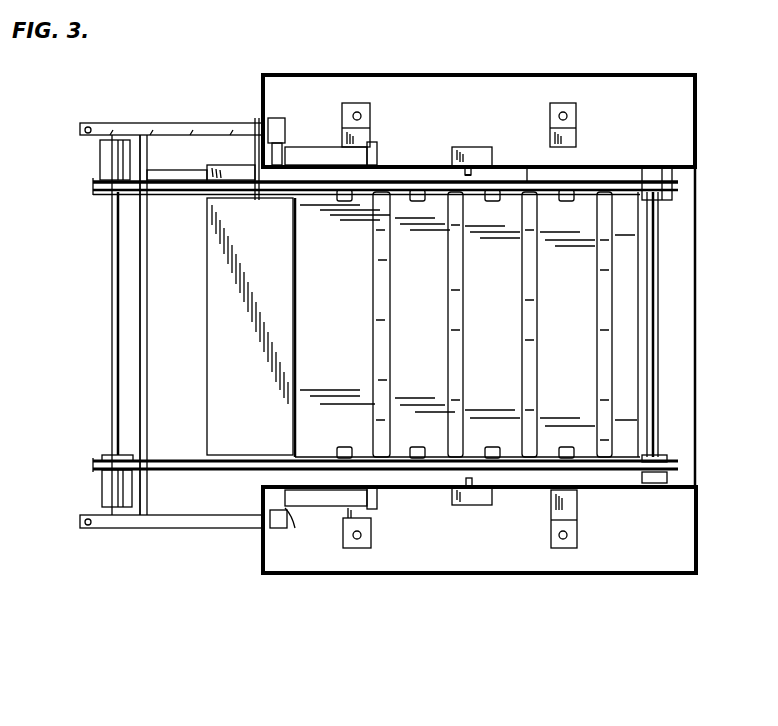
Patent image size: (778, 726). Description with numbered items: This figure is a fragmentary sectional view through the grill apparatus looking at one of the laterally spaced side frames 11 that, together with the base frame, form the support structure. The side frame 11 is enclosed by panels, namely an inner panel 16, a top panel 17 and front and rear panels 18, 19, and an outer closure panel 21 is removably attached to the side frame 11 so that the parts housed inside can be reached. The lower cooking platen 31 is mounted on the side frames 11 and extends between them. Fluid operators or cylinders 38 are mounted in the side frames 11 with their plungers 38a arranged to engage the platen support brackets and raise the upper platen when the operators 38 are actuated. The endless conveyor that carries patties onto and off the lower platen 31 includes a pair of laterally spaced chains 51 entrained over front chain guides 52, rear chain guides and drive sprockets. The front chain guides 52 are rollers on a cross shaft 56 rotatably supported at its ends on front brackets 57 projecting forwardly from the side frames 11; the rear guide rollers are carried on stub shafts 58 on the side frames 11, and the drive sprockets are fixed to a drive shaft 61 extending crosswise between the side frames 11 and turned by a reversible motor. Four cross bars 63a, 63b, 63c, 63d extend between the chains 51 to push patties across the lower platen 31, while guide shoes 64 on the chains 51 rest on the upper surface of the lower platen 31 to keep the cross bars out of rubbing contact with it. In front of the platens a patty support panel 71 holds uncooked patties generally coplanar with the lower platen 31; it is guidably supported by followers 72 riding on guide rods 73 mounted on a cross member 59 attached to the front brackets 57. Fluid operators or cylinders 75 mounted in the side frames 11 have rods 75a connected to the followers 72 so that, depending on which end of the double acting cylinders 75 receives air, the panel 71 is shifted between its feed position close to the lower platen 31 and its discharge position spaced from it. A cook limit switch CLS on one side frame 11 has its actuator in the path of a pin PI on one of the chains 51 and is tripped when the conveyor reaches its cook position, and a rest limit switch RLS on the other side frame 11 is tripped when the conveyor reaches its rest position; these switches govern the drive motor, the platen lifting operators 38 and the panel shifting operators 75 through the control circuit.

The side frames 11 is at (470, 73).
The outer closure panel 21 is at (558, 75).
The rear panel 19 is at (697, 535).
The inner panel 16 is at (588, 167).
The top panel 17 is at (615, 470).
The front panel 18 is at (262, 110).
The front brackets 57 is at (146, 123).
The front chain guides 52 is at (100, 152).
The cross shaft 56 is at (110, 210).
The cross member 59 is at (148, 302).
The patty support panel 71 is at (240, 322).
The followers 72 is at (208, 166).
The guide rods 73 is at (160, 178).
The fluid operators 75 is at (310, 150).
The rods 75a is at (290, 536).
The fluid operators 38 is at (372, 535).
The plungers 38a is at (567, 537).
The chains 51 is at (527, 182).
The stub shafts 58 is at (662, 167).
The drive shaft 61 is at (655, 250).
The lower cooking platen 31 is at (625, 372).
The cross bar 63a is at (597, 282).
The cross bar 63b is at (527, 322).
The cross bar 63c is at (450, 332).
The cross bar 63d is at (372, 368).
The guide shoes 64 is at (344, 447).
The cook limit switch CLS is at (456, 147).
The pin PI is at (464, 175).
The rest limit switch RLS is at (468, 506).